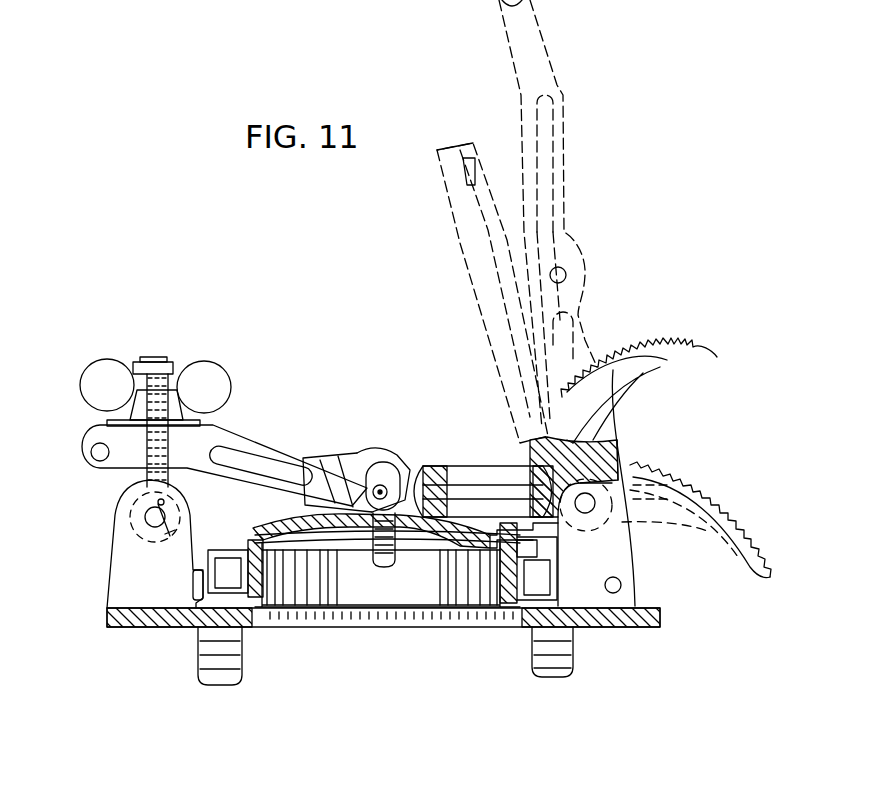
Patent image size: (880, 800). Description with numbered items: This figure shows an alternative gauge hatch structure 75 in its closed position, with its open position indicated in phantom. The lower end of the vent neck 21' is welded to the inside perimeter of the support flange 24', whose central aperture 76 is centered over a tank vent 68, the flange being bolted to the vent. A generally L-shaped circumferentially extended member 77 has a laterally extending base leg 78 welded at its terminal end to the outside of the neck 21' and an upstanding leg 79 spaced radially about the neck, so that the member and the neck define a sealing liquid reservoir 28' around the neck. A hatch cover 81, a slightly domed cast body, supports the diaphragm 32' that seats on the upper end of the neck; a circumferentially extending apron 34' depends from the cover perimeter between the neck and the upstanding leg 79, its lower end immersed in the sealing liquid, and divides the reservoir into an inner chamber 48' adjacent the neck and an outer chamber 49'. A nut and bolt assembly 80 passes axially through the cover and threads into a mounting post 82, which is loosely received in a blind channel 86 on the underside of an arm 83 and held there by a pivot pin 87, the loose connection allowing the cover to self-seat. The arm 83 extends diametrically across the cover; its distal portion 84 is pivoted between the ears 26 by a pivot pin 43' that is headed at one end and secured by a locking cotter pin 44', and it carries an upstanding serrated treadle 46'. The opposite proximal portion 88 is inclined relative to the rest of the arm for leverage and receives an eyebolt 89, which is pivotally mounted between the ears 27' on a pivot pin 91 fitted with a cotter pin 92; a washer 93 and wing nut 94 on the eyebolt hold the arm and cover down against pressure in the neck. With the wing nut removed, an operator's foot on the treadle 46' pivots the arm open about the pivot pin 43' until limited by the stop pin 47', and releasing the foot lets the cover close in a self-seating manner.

The gauge hatch structure 75 is at (605, 268).
The wing nut 94 is at (108, 370).
The washer 93 is at (115, 415).
The proximal portion 88 is at (82, 432).
The eyebolt 89 is at (140, 470).
The arm 83 is at (262, 447).
The ears 27' is at (120, 544).
The cotter pin 92 is at (144, 515).
The pivot pin 91 is at (150, 522).
The support flange 24' is at (383, 639).
The vent neck 21' is at (389, 630).
The circumferentially extended member 77 is at (206, 650).
The base leg 78 is at (238, 655).
The tank vent 68 is at (557, 650).
The diaphragm 32' is at (387, 593).
The apron 34' is at (235, 543).
The upstanding leg 79 is at (198, 570).
The inner chamber 48' is at (446, 589).
The central aperture 76 is at (495, 620).
The outer chamber 49' is at (499, 606).
The reservoir 28' is at (520, 625).
The hatch cover 81 is at (307, 500).
The pivot pin 87 is at (367, 455).
The mounting post 82 is at (388, 468).
The nut and bolt assembly 80 is at (397, 550).
The blind channel 86 is at (443, 466).
The stop pin 47' is at (626, 488).
The distal portion 84 is at (593, 447).
The pivot pin 43' is at (624, 418).
The serrated treadle 46' is at (654, 367).
The locking cotter pin 44' is at (700, 515).
The bar 26 is at (620, 549).